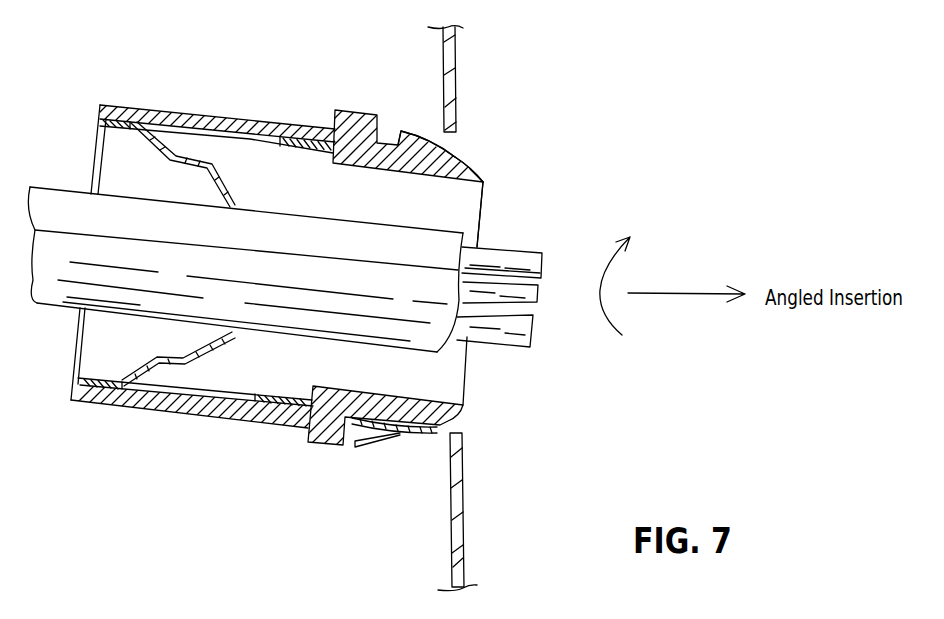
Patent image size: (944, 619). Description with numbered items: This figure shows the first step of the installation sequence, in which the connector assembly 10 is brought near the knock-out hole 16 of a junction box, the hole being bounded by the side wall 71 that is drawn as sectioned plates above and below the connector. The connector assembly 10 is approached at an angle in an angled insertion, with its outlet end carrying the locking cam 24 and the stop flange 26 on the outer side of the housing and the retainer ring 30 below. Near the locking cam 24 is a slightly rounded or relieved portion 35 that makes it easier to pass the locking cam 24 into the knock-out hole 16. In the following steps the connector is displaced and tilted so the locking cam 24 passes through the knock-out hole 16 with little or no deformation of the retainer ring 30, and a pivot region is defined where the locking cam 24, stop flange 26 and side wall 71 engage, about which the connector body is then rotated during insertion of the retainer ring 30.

The connector assembly 10 is at (228, 118).
The stop flange 26 is at (338, 110).
The locking cam 24 is at (415, 125).
The knock-out hole 16 is at (456, 142).
The rounded portion of outlet end portion 35 is at (481, 161).
The side wall 71 is at (453, 68).
The retainer ring 30 is at (397, 442).